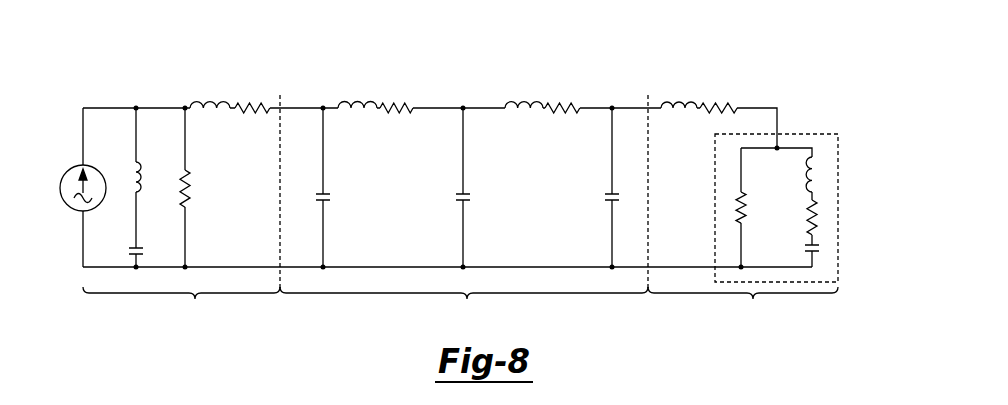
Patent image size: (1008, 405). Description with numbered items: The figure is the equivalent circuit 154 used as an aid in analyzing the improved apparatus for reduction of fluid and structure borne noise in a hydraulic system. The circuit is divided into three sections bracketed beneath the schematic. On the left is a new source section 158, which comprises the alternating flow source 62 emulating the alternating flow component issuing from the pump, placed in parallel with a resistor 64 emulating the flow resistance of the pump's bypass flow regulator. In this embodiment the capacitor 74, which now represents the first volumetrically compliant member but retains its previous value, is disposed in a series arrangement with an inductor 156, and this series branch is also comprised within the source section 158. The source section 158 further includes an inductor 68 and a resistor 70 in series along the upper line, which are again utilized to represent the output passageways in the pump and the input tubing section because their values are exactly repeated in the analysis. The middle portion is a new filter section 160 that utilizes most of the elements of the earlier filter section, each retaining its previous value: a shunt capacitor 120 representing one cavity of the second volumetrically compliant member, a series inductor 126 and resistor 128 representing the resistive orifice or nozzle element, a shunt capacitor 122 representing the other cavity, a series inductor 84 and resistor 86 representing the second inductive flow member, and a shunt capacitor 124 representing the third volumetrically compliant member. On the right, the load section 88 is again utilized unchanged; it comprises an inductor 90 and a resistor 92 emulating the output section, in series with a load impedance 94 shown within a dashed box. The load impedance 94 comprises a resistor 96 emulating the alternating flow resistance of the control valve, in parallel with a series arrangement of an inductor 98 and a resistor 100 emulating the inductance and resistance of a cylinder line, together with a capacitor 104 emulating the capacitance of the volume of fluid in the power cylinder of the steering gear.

The alternating flow source 62 is at (71, 167).
The resistor 64 is at (188, 185).
The inductor 68 is at (201, 104).
The resistor 70 is at (240, 105).
The capacitor 74 is at (132, 259).
The inductor 84 is at (522, 103).
The resistor 86 is at (566, 106).
The load section 88 is at (743, 310).
The inductor 90 is at (676, 102).
The resistor 92 is at (722, 106).
The load impedance 94 is at (840, 162).
The resistor 96 is at (738, 198).
The inductor 98 is at (818, 158).
The resistor 100 is at (807, 212).
The capacitor 104 is at (806, 255).
The capacitor 120 is at (331, 200).
The capacitor 122 is at (458, 196).
The capacitor 124 is at (608, 196).
The inductor 126 is at (363, 103).
The resistor 128 is at (397, 105).
The equivalent circuit 154 is at (782, 58).
The inductor 156 is at (143, 167).
The source section 158 is at (181, 310).
The filter section 160 is at (464, 310).